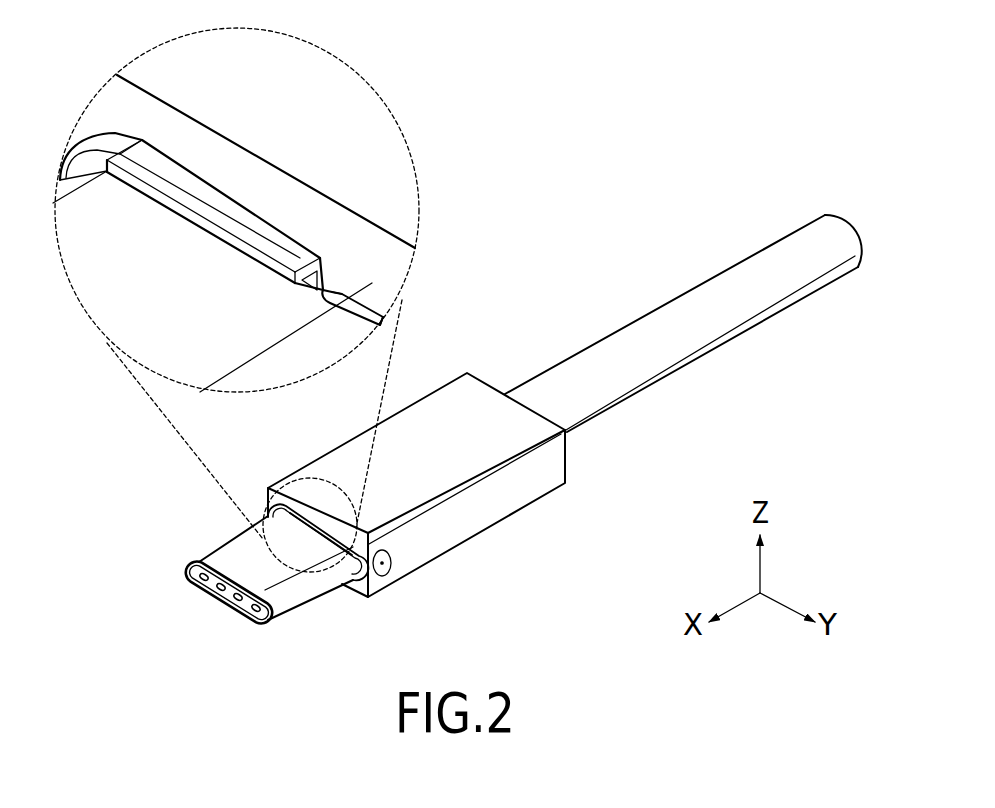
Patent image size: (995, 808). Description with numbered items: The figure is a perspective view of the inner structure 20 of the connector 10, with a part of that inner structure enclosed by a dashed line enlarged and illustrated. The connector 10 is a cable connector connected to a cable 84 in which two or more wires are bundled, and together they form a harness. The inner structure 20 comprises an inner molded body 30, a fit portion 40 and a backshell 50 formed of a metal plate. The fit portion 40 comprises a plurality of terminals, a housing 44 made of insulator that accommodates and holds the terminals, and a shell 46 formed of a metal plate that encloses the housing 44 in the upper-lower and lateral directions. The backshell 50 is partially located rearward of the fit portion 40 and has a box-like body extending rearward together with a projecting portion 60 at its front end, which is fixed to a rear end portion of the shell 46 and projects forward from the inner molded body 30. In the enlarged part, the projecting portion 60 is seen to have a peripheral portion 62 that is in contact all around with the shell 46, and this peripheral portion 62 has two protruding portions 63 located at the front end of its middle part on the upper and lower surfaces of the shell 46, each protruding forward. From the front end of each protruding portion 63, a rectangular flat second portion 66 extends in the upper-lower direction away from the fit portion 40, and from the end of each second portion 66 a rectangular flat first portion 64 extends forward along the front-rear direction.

The connector 10 is at (417, 416).
The inner structure 20 is at (467, 373).
The inner molded body 30 is at (332, 162).
The fit portion 40 is at (308, 602).
The housing 44 is at (199, 579).
The shell 46 is at (183, 315).
The backshell 50 is at (428, 286).
The projecting portion 60 is at (372, 291).
The peripheral portion 62 is at (355, 276).
The protruding portion 63 is at (377, 311).
The first portion 64 is at (263, 240).
The second portion 66 is at (348, 268).
The cable 84 is at (822, 211).